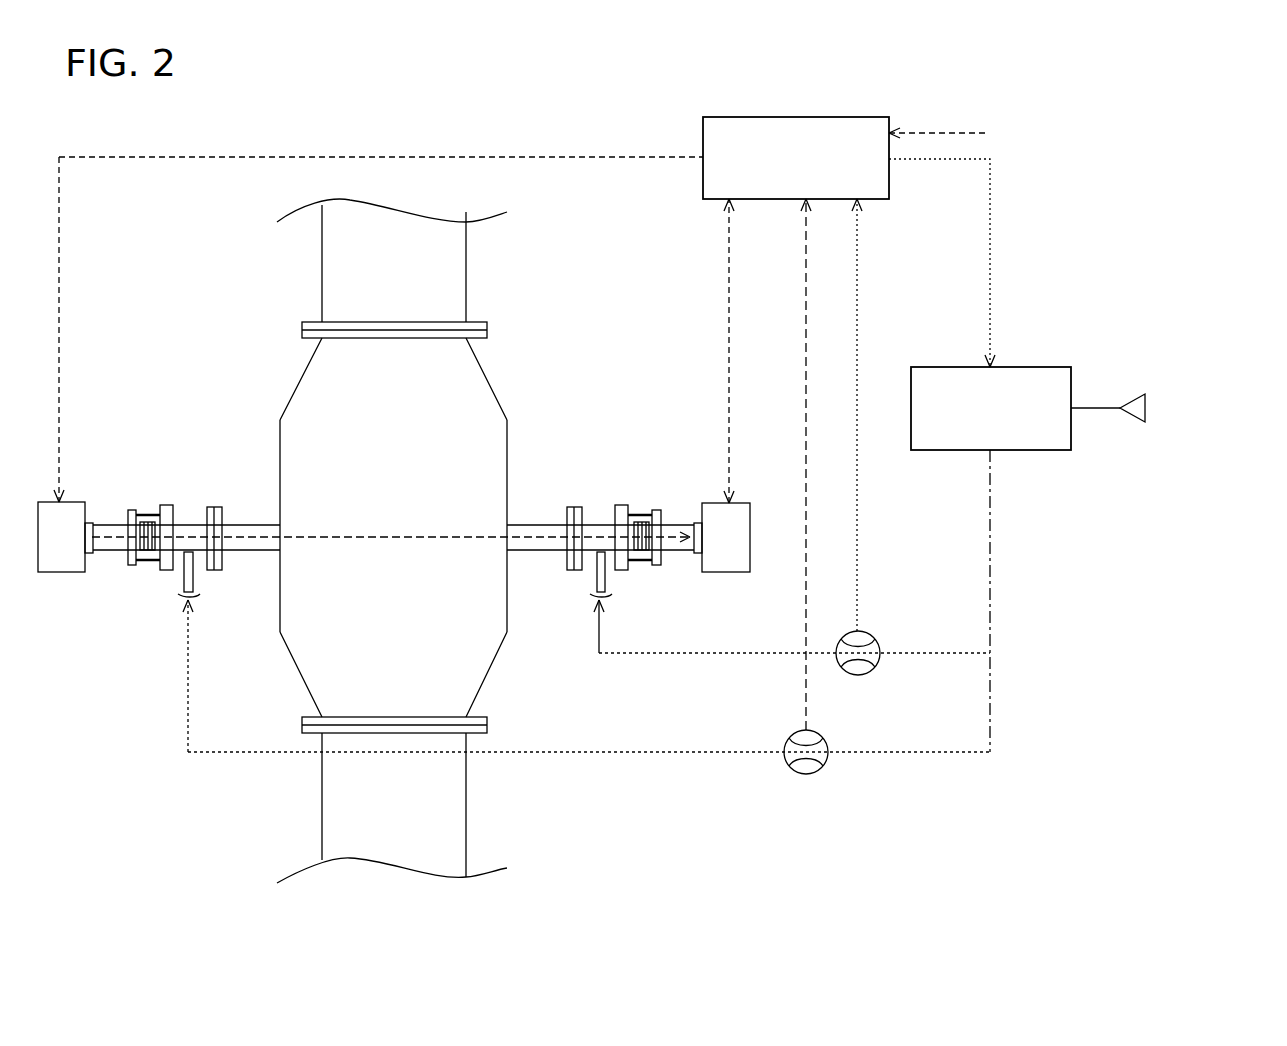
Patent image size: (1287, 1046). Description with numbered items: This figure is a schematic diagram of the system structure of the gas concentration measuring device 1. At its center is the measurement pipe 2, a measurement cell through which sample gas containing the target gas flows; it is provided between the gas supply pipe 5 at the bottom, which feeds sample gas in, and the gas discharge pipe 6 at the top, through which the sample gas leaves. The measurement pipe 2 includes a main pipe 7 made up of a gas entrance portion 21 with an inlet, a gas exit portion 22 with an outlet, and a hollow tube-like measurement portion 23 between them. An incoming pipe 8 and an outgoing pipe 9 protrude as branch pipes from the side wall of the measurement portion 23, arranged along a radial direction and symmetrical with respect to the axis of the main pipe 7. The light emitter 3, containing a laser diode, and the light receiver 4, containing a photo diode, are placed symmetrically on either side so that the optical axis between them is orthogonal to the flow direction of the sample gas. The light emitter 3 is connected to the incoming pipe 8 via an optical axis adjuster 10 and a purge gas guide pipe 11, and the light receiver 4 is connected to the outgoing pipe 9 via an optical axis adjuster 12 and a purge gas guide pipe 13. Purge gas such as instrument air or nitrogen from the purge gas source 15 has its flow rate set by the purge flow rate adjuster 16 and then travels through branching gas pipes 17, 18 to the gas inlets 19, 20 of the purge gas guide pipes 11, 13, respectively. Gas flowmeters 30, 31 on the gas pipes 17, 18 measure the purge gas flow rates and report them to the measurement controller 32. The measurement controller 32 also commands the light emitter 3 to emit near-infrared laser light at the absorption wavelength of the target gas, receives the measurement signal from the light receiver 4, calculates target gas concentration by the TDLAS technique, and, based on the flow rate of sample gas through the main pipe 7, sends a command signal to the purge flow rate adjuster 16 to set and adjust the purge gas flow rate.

The gas concentration measuring device 1 is at (592, 360).
The measurement pipe 2 is at (238, 342).
The light emitter 3 is at (78, 565).
The light receiver 4 is at (733, 565).
The gas supply pipe 5 is at (335, 795).
The gas discharge pipe 6 is at (443, 297).
The main pipe 7 is at (318, 641).
The incoming pipe 8 is at (262, 525).
The outgoing pipe 9 is at (522, 525).
The optical axis adjuster 10 is at (138, 510).
The purge gas guide pipe 11 is at (207, 532).
The optical axis adjuster 12 is at (638, 510).
The purge gas guide pipe 13 is at (582, 525).
The purge gas source 15 is at (1130, 416).
The purge flow rate adjuster 16 is at (1015, 450).
The gas pipe 17 is at (210, 756).
The gas pipe 18 is at (683, 657).
The gas inlet 19 is at (195, 555).
The gas inlet 20 is at (605, 555).
The gas entrance portion 21 is at (475, 679).
The gas exit portion 22 is at (468, 392).
The measurement portion 23 is at (488, 604).
The gas flowmeter 30 is at (810, 775).
The gas flowmeter 31 is at (866, 631).
The measurement controller 32 is at (881, 199).